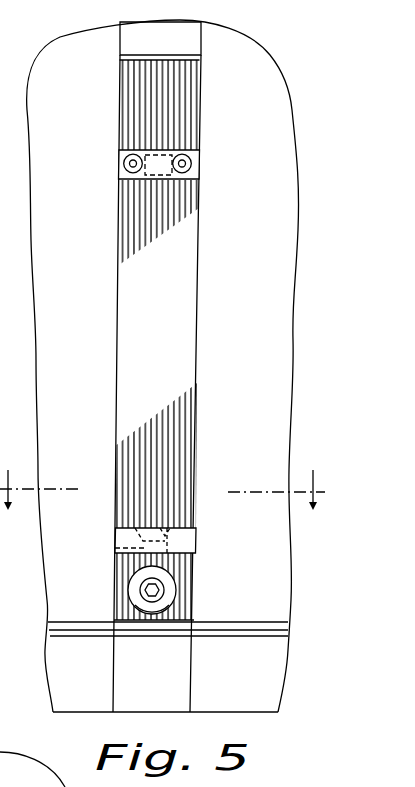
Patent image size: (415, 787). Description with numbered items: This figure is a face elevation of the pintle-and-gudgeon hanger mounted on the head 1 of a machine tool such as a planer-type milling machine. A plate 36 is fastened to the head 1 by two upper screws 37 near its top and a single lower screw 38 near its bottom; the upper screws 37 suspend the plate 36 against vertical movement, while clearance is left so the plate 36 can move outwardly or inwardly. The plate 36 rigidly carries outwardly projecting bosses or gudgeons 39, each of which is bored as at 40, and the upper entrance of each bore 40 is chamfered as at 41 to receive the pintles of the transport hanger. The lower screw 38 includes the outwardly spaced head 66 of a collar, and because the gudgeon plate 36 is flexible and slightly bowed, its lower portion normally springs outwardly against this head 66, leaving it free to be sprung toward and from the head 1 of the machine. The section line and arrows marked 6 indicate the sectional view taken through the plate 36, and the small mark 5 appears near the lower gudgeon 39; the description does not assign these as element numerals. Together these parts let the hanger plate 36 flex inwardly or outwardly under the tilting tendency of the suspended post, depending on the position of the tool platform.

The head 1 is at (262, 80).
The plate 36 is at (178, 321).
The upper screws 37 is at (191, 163).
The lower screw 38 is at (176, 589).
The gudgeons 39 is at (195, 176).
The bore 40 is at (115, 549).
The chamfer 41 is at (168, 524).
The head 66 is at (165, 604).
The section indicator 5 is at (144, 545).
The section line 6 is at (162, 477).